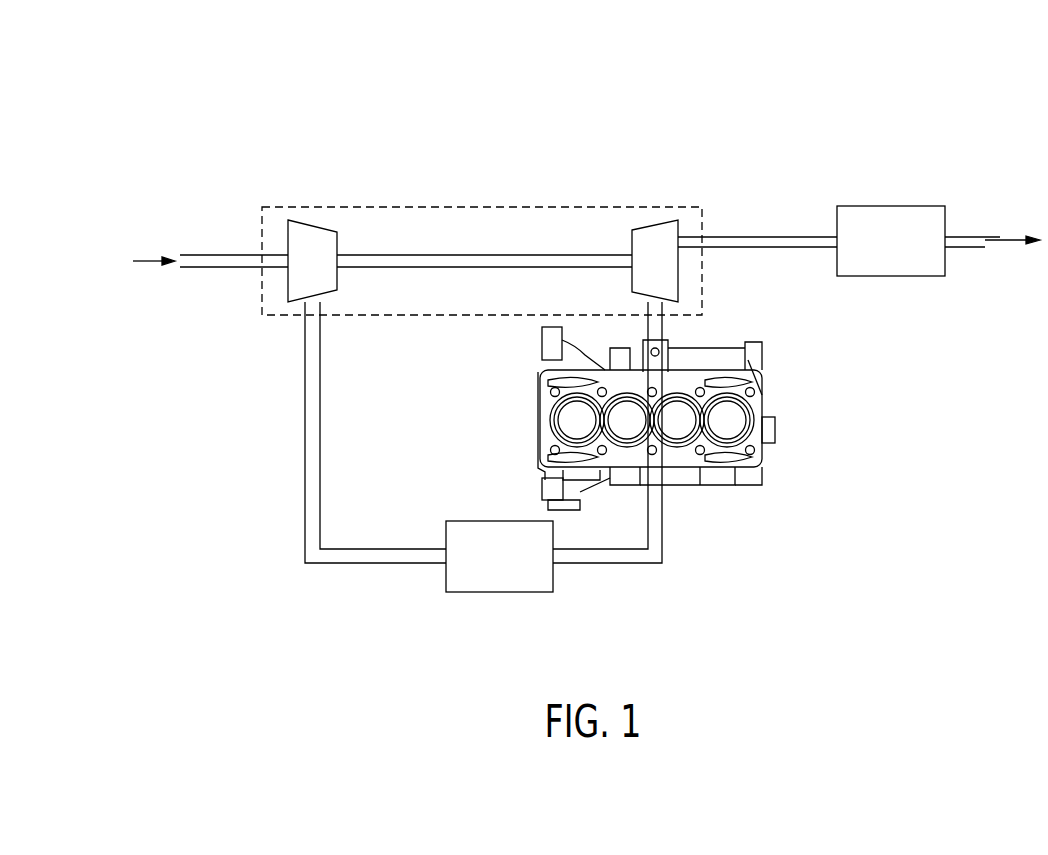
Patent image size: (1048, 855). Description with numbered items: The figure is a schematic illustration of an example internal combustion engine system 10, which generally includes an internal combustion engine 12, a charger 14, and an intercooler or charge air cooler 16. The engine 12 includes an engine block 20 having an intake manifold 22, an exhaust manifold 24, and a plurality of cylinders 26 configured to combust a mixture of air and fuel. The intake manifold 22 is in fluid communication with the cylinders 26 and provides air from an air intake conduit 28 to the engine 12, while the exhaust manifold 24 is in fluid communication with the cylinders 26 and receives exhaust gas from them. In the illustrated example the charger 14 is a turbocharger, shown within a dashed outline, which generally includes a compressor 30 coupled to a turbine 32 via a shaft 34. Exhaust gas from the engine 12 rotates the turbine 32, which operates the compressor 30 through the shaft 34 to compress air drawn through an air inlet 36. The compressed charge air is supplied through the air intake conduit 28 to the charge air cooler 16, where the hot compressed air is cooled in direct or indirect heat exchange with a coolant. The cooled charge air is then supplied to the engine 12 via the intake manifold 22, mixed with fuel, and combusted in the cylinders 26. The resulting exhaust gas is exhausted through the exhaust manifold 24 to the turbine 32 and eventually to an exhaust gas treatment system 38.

The internal combustion engine system 10 is at (586, 372).
The internal combustion engine 12 is at (627, 413).
The charger 14 is at (482, 228).
The charge air cooler 16 is at (498, 592).
The engine block 20 is at (543, 447).
The intake manifold 22 is at (725, 503).
The exhaust manifold 24 is at (765, 322).
The cylinders 26 is at (570, 418).
The air intake conduit 28 is at (305, 487).
The compressor 30 is at (312, 265).
The turbine 32 is at (653, 255).
The shaft 34 is at (470, 255).
The air inlet 36 is at (222, 268).
The exhaust gas treatment system 38 is at (888, 206).